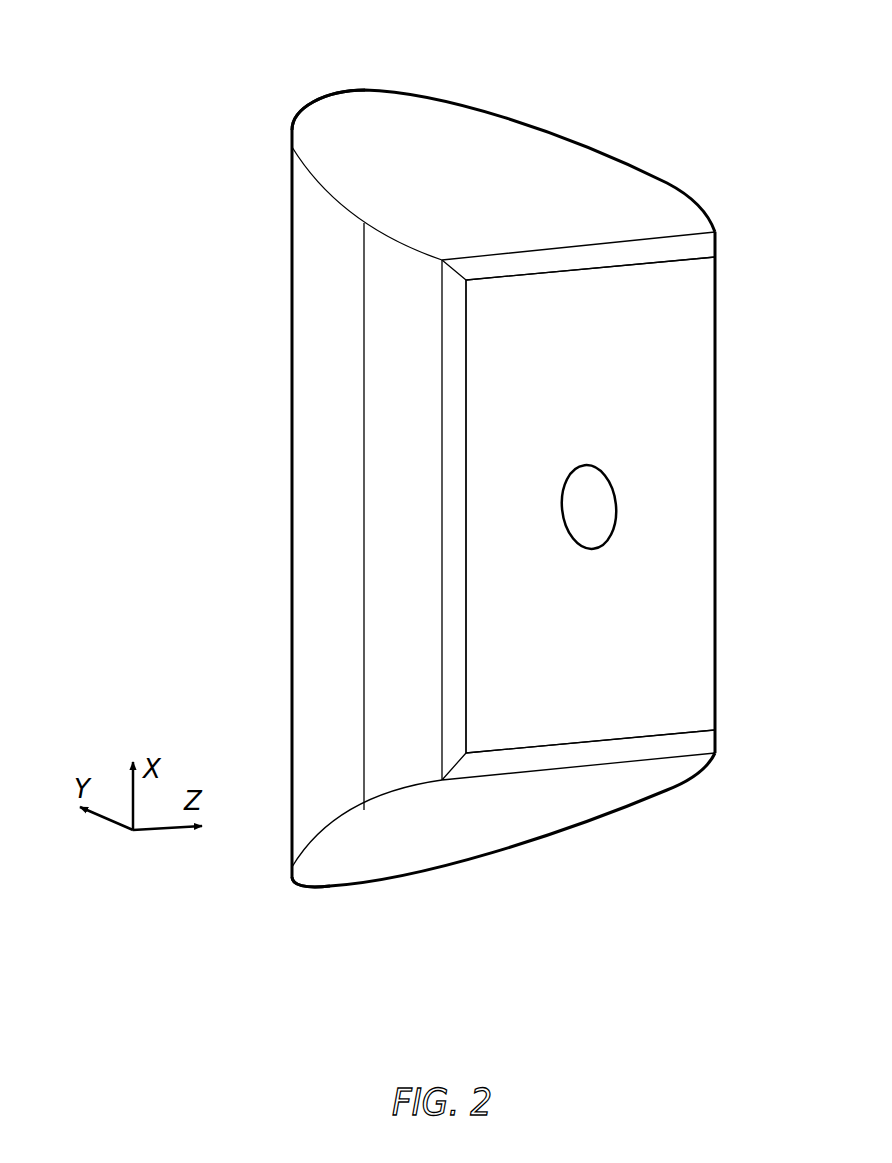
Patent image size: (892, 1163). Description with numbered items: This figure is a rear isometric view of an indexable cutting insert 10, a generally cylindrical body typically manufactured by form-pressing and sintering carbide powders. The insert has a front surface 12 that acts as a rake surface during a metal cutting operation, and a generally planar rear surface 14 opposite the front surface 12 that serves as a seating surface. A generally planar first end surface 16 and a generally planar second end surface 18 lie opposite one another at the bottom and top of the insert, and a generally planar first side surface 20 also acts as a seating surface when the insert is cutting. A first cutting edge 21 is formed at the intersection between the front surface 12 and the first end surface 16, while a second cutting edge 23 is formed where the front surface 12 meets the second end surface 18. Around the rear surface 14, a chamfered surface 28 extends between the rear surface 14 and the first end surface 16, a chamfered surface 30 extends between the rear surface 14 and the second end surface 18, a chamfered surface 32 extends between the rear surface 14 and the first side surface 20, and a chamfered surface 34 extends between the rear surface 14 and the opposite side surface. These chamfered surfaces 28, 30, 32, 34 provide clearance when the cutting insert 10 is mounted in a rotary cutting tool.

The cutting insert 10 is at (167, 147).
The front surface 12 is at (280, 378).
The rear surface 14 is at (681, 590).
The first end surface 16 is at (469, 828).
The second end surface 18 is at (466, 130).
The first side surface 20 is at (394, 450).
The first cutting edge 21 is at (328, 890).
The second cutting edge 23 is at (328, 92).
The chamfered surface 28 is at (598, 253).
The chamfered surface 30 is at (598, 755).
The chamfered surface 32 is at (454, 558).
The chamfered surface 34 is at (717, 393).